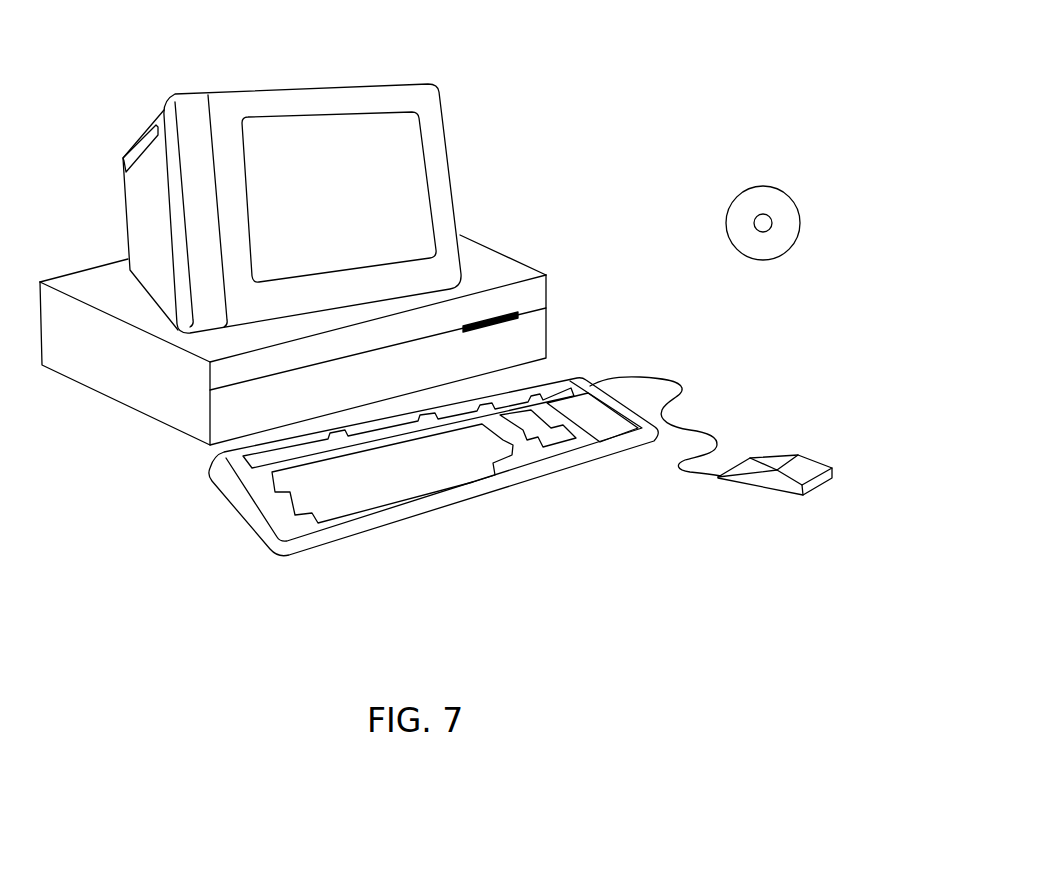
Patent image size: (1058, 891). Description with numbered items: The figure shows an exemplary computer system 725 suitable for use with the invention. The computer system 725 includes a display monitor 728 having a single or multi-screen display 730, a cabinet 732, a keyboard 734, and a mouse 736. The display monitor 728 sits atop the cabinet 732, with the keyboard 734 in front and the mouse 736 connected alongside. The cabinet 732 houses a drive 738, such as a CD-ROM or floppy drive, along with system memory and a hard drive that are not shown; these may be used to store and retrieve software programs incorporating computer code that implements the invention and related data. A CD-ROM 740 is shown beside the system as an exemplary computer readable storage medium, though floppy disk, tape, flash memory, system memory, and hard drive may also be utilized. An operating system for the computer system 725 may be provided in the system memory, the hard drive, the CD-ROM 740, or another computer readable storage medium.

The computer system 725 is at (654, 75).
The display monitor 728 is at (453, 207).
The display 730 is at (408, 153).
The cabinet 732 is at (168, 428).
The keyboard 734 is at (440, 510).
The mouse 736 is at (820, 458).
The drive 738 is at (518, 313).
The CD-ROM 740 is at (782, 187).